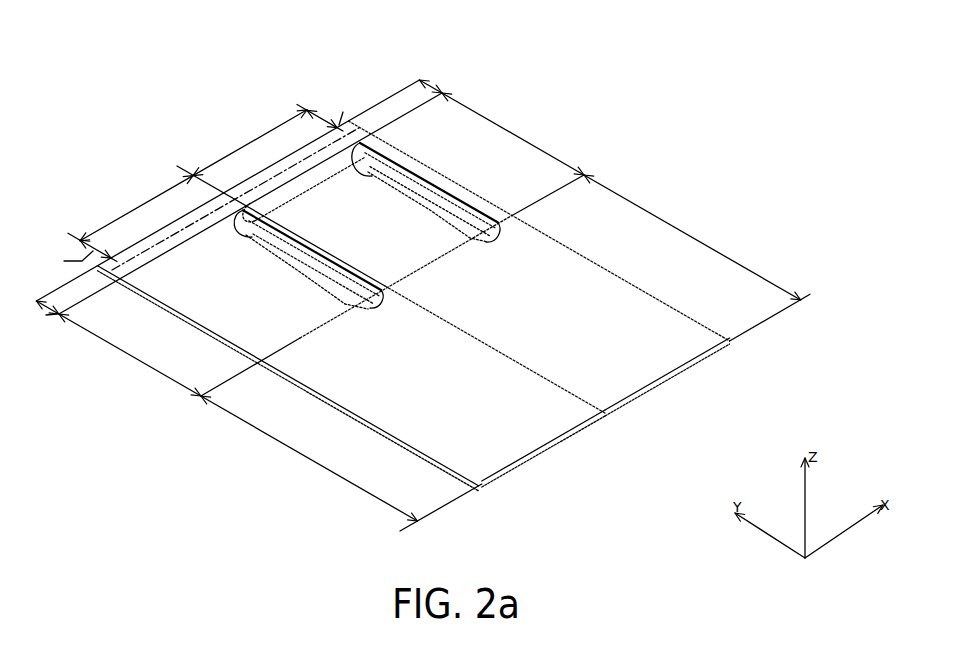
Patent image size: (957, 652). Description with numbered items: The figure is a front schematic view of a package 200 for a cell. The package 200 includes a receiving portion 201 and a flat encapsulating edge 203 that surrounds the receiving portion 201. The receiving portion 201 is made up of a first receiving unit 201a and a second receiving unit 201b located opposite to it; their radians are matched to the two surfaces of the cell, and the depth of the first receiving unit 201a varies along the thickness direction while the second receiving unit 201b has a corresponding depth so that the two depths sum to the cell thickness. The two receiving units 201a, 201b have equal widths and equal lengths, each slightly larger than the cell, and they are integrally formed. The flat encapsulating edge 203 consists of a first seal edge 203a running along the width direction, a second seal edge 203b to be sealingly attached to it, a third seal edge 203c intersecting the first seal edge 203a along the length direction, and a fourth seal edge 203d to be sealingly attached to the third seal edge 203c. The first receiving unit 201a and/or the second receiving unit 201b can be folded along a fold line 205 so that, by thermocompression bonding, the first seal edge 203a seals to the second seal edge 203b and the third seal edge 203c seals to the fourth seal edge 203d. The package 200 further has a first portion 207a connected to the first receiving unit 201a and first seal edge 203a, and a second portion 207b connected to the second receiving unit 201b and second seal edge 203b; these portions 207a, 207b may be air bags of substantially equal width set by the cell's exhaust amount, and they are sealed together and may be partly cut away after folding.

The package 200 is at (438, 27).
The receiving portion 201 is at (362, 247).
The first receiving unit 201a is at (227, 317).
The second receiving unit 201b is at (440, 221).
The flat encapsulating edge 203 is at (174, 233).
The first seal edge 203a is at (173, 317).
The second seal edge 203b is at (427, 173).
The third seal edge 203c is at (140, 254).
The fourth seal edge 203d is at (278, 174).
The fold line 205 is at (605, 414).
The first portion 207a is at (515, 455).
The second portion 207b is at (652, 372).